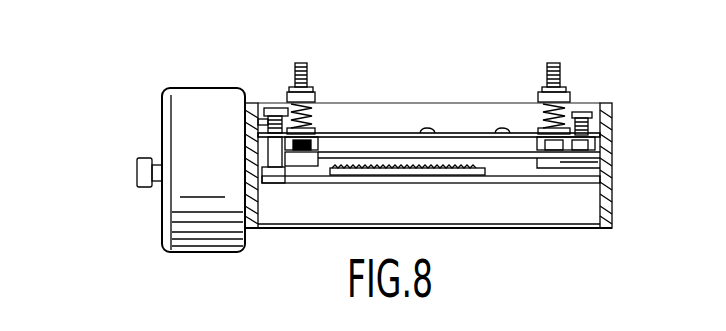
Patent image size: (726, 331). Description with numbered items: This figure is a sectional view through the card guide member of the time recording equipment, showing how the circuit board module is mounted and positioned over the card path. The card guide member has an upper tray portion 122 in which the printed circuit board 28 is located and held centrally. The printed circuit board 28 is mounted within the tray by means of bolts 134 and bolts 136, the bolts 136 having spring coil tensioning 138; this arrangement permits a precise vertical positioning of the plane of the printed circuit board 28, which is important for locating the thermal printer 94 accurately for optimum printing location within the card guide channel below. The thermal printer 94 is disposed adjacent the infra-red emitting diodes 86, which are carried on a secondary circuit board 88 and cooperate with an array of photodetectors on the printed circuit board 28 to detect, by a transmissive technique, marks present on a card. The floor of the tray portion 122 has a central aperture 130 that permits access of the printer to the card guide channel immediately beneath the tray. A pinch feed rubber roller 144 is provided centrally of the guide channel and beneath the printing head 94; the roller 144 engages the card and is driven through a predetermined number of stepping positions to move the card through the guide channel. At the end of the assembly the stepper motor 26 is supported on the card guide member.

The stepper motor 26 is at (173, 243).
The printed circuit board 28 is at (377, 133).
The infra-red emitting diodes 86 is at (400, 178).
The secondary circuit board 88 is at (325, 178).
The thermal printer 94 is at (510, 134).
The upper tray portion 122 is at (417, 104).
The central aperture 130 is at (560, 162).
The bolts 134 is at (266, 112).
The bolts 136 is at (312, 86).
The spring coil tensioning 138 is at (294, 110).
The pinch feed rubber roller 144 is at (535, 177).